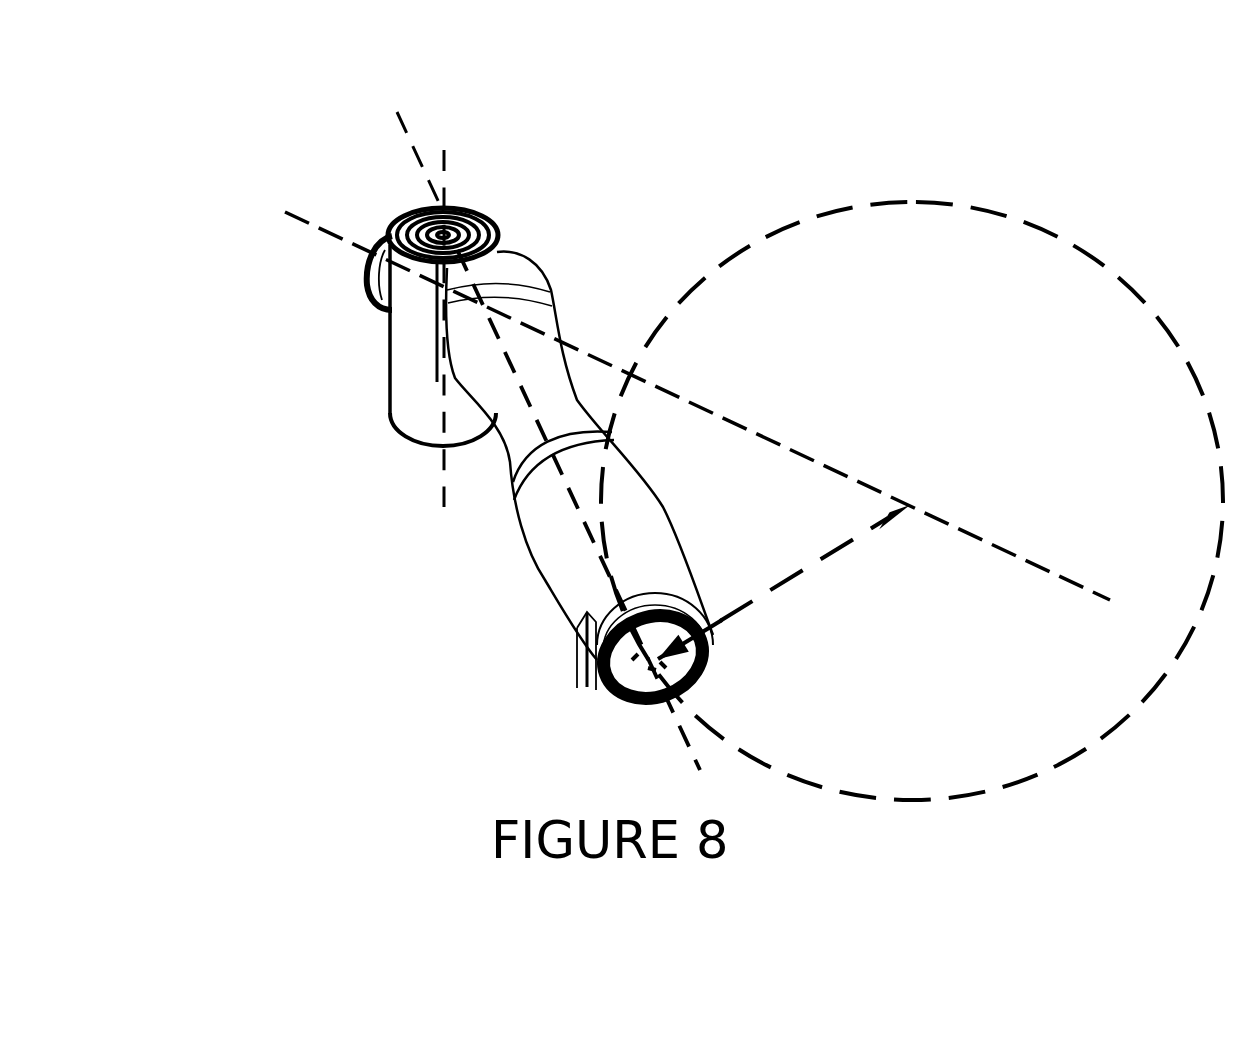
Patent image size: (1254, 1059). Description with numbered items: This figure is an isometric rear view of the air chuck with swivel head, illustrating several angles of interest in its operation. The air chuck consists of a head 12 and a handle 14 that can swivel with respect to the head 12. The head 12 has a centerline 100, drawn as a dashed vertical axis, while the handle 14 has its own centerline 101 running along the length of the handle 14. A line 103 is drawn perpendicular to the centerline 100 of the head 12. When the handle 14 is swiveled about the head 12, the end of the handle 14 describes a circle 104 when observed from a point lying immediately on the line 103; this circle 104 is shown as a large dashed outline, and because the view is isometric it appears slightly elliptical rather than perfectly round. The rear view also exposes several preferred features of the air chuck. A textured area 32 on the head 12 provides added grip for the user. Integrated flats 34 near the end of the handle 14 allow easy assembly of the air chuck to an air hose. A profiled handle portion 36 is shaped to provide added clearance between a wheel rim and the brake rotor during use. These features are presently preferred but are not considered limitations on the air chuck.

The head 12 is at (393, 413).
The handle 14 is at (547, 526).
The textured area 32 is at (417, 212).
The integrated flats 34 is at (577, 657).
The profiled handle portion 36 is at (527, 337).
The centerline of the head 100 is at (443, 470).
The centerline of the handle 101 is at (678, 725).
The line perpendicular to the center line of the head 103 is at (324, 225).
The circle 104 is at (1183, 357).